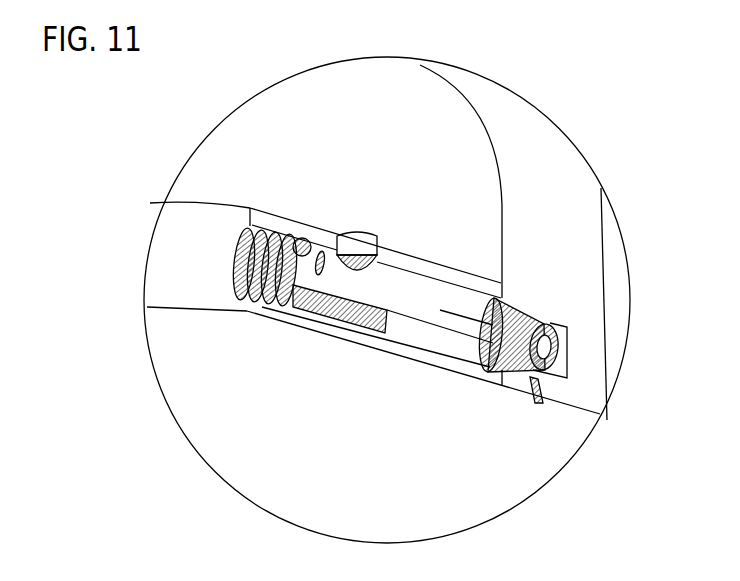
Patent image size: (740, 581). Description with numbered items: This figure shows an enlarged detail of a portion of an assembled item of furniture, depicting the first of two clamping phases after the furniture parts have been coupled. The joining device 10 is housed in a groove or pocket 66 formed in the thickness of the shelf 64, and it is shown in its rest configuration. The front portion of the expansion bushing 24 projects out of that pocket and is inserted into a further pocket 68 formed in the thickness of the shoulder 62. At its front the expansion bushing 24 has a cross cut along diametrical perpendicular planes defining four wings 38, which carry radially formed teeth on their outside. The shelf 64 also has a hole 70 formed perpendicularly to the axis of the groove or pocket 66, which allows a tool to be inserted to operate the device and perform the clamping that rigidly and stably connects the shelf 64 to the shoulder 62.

The joining device 10 is at (337, 323).
The expansion bushing 24 is at (540, 404).
The wings 38 is at (567, 346).
The shoulder 62 is at (560, 203).
The shelf 64 is at (173, 237).
The groove or pocket 66 is at (247, 307).
The further pocket 68 is at (567, 380).
The hole 70 is at (358, 236).